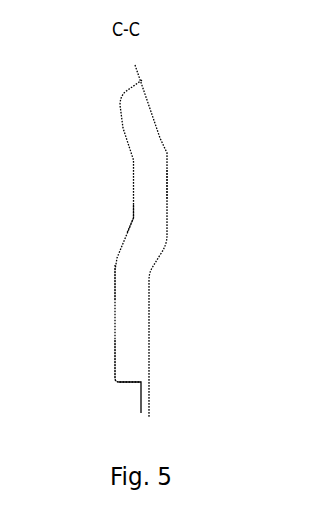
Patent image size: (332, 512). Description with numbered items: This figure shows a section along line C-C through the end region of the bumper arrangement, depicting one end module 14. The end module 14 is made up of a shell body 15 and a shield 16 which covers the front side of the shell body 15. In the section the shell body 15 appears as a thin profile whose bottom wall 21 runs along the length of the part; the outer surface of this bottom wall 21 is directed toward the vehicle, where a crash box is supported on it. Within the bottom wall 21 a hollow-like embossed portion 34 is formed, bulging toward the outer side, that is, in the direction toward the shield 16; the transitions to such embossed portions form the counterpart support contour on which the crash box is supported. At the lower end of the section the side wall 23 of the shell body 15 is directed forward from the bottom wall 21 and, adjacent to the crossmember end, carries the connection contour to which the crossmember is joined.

The end module 14 is at (189, 108).
The shield 16 is at (168, 182).
The embossed portion 34 is at (131, 216).
The bottom wall 21 is at (116, 281).
The shell body 15 is at (114, 353).
The side wall 23 is at (127, 385).